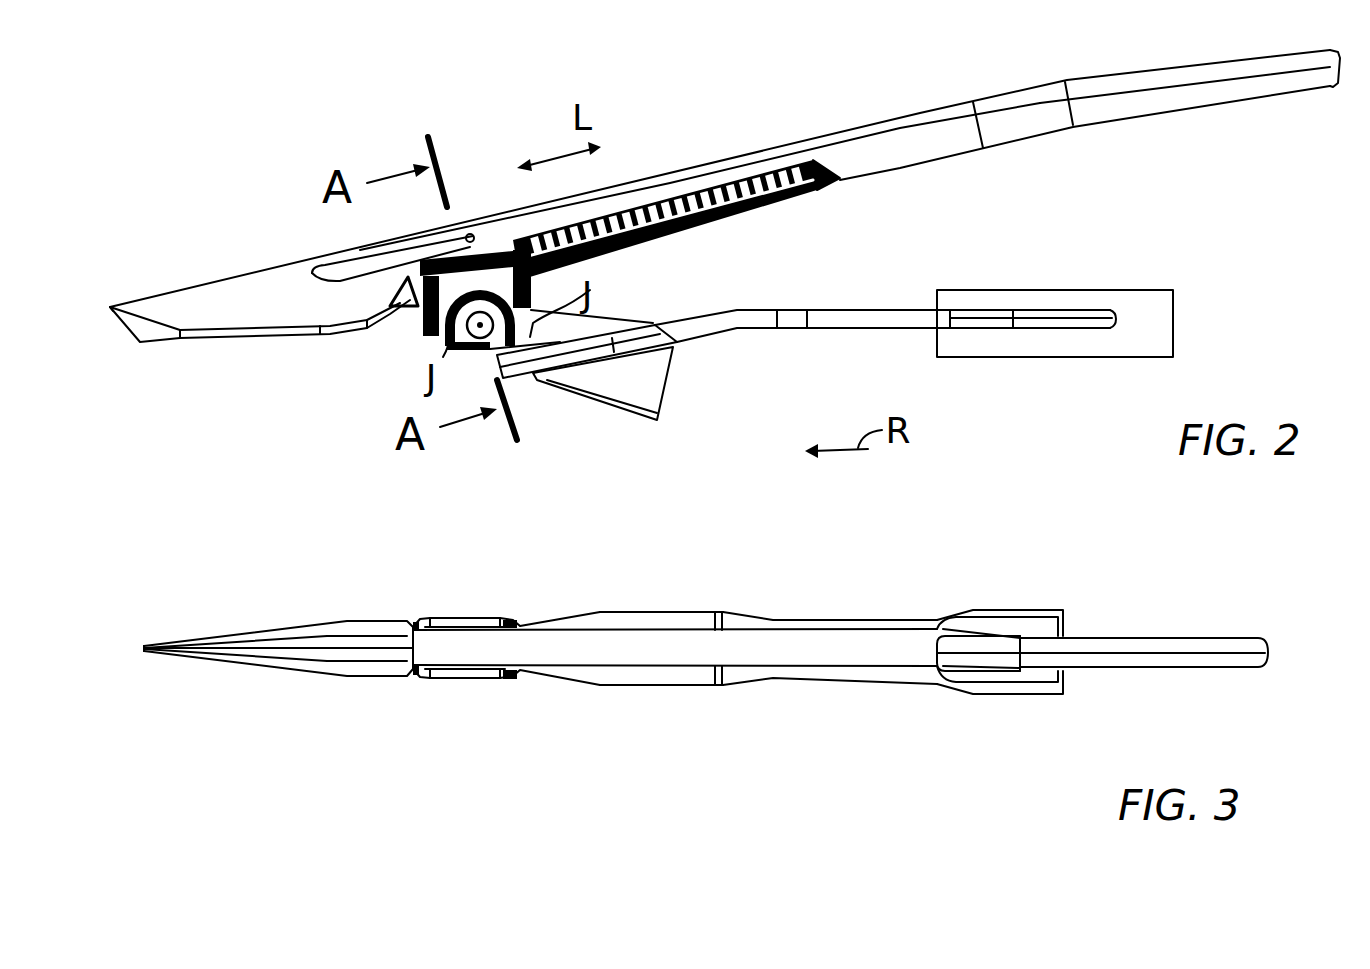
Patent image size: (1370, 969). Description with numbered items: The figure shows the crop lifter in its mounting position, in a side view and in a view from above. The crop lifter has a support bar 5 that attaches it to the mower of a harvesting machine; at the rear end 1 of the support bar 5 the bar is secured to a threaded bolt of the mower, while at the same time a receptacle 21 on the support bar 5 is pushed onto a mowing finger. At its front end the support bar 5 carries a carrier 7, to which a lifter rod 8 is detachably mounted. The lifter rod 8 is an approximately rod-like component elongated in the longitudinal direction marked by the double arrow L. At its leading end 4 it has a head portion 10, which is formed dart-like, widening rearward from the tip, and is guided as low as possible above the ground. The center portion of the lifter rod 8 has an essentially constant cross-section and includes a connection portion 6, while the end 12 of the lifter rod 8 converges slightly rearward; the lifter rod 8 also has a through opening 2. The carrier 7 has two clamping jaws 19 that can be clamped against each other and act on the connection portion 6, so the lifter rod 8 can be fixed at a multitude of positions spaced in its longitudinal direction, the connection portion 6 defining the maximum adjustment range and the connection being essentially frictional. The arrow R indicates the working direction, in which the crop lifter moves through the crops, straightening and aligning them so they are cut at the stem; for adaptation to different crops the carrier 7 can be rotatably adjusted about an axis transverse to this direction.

In FIG. 2, the rear end 1 is at (1104, 313).
In FIG. 3, the rear end 1 is at (1043, 608).
In FIG. 2, the through opening 2 is at (360, 270).
In FIG. 2, the leading end 4 is at (113, 300).
In FIG. 3, the leading end 4 is at (148, 630).
In FIG. 2, the support bar 5 is at (837, 330).
In FIG. 3, the support bar 5 is at (742, 615).
In FIG. 2, the connection portion 6 is at (647, 210).
In FIG. 2, the carrier 7 is at (420, 325).
In FIG. 3, the carrier 7 is at (453, 617).
In FIG. 2, the lifter rod 8 is at (820, 137).
In FIG. 3, the lifter rod 8 is at (667, 647).
In FIG. 2, the head portion 10 is at (213, 323).
In FIG. 3, the head portion 10 is at (253, 630).
In FIG. 2, the end 12 is at (1247, 103).
In FIG. 3, the end 12 is at (1187, 640).
In FIG. 2, the clamping jaws 19 is at (481, 325).
In FIG. 3, the clamping jaws 19 is at (490, 620).
In FIG. 2, the receptacle 21 is at (667, 350).